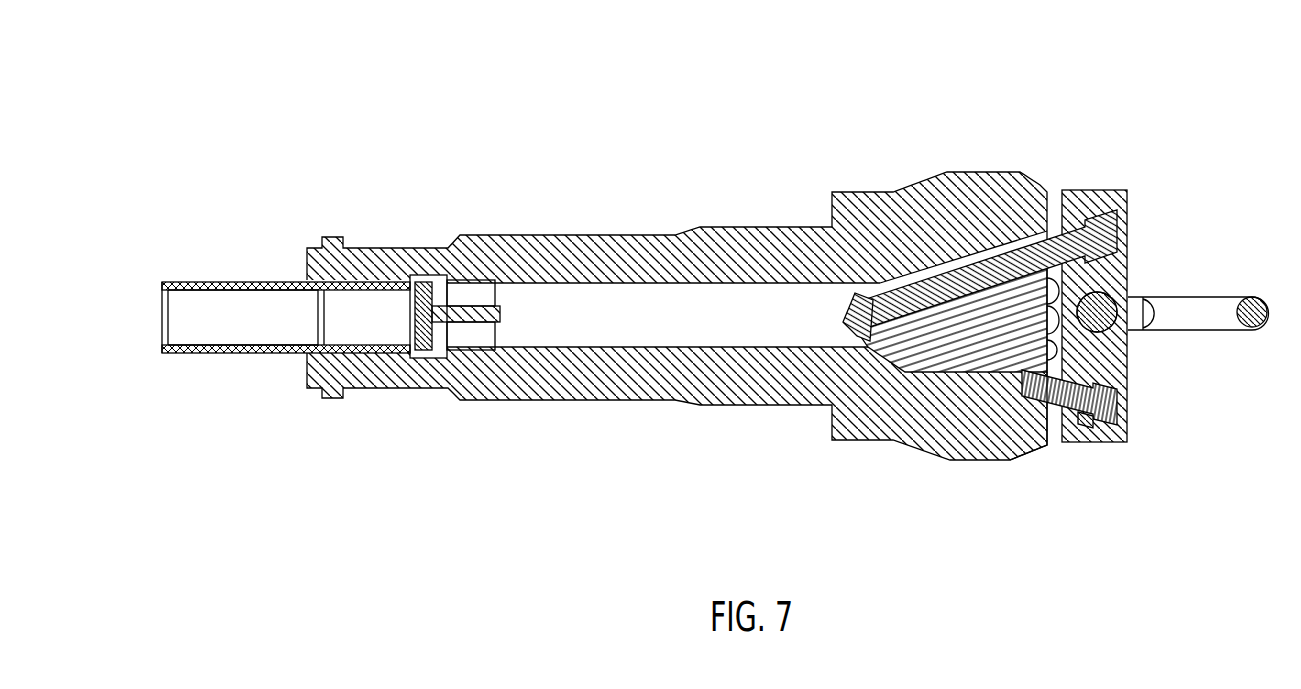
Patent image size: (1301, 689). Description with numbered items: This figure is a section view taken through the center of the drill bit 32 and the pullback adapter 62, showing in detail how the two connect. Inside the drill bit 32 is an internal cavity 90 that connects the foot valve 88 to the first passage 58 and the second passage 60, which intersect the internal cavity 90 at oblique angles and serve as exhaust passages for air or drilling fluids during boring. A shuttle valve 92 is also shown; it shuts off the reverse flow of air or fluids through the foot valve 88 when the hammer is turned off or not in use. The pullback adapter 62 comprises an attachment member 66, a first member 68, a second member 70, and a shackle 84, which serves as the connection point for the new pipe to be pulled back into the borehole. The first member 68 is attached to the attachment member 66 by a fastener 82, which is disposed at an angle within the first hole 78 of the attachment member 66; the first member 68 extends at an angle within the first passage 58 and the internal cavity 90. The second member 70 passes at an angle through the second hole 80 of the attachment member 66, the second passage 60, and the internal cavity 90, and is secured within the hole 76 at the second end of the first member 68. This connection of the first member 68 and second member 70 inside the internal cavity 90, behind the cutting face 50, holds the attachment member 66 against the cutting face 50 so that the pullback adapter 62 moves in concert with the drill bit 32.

The drill bit 32 is at (765, 98).
The cutting face 50 is at (1047, 410).
The first passage 58 is at (1002, 447).
The second passage 60 is at (973, 253).
The pullback adapter 62 is at (1165, 222).
The attachment member 66 is at (1127, 262).
The first member 68 is at (962, 365).
The second member 70 is at (1040, 183).
The hole 76 is at (868, 340).
The first hole 78 is at (1123, 410).
The second hole 80 is at (1115, 213).
The fastener 82 is at (1085, 413).
The shackle 84 is at (1203, 308).
The foot valve 88 is at (218, 335).
The internal cavity 90 is at (660, 305).
The shuttle valve 92 is at (447, 325).